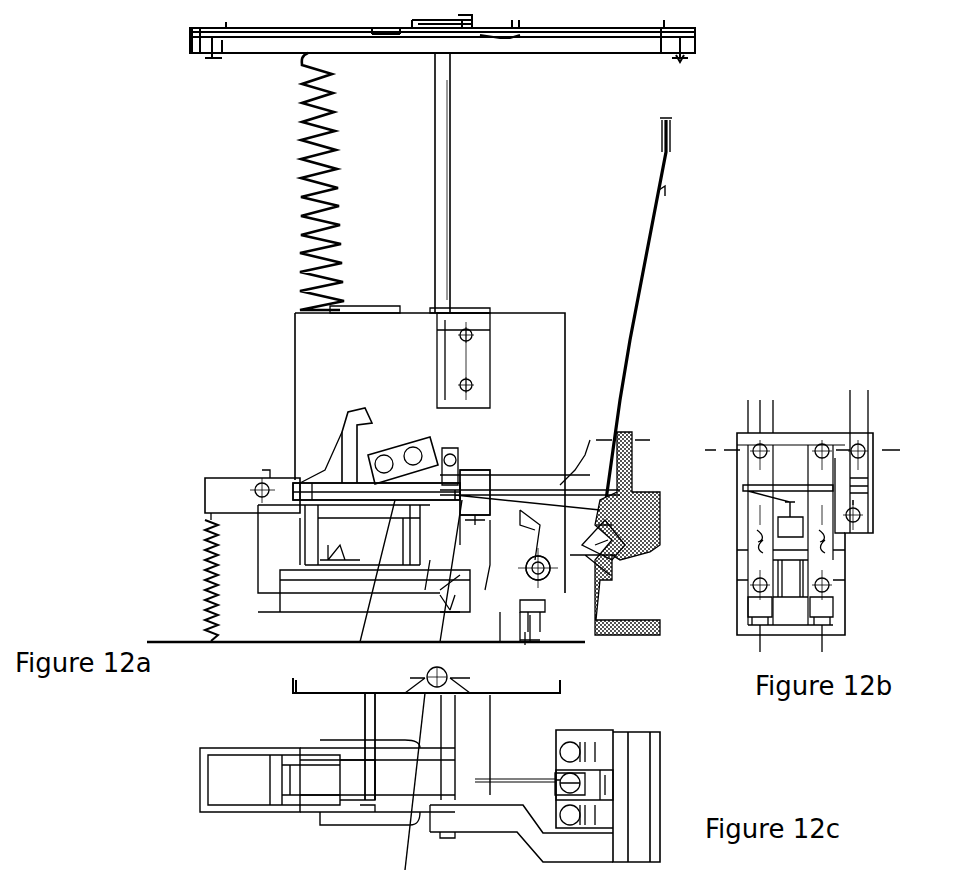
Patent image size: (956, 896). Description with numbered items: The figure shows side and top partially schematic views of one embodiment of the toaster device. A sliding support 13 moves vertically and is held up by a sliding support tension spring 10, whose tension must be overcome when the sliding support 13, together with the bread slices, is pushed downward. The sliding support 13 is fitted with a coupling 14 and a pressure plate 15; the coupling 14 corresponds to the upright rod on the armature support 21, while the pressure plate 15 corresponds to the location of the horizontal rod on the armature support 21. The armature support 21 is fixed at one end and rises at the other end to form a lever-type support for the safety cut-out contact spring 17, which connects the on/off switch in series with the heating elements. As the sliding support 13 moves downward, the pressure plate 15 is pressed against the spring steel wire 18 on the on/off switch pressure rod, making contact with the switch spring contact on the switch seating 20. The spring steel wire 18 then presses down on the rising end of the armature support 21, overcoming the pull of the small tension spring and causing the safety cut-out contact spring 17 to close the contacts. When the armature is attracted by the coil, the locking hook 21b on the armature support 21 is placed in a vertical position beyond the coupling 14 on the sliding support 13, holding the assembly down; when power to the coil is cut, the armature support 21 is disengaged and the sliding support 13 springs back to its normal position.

In FIG. 12A, the sliding support tension spring 10 is at (300, 163).
In FIG. 12A, the sliding support 13 is at (538, 325).
In FIG. 12A, the coupling 14 is at (397, 455).
In FIG. 12C, the coupling 14 is at (365, 714).
In FIG. 12A, the pressure plate 15 is at (475, 505).
In FIG. 12A, the safety cut-out contact spring 17 is at (520, 490).
In FIG. 12A, the spring steel wire 18 is at (518, 510).
In FIG. 12C, the switch seating 20 is at (635, 710).
In FIG. 12A, the armature support 21 is at (333, 470).
In FIG. 12C, the armature support 21 is at (307, 820).
In FIG. 12A, the locking hook 21b is at (345, 410).